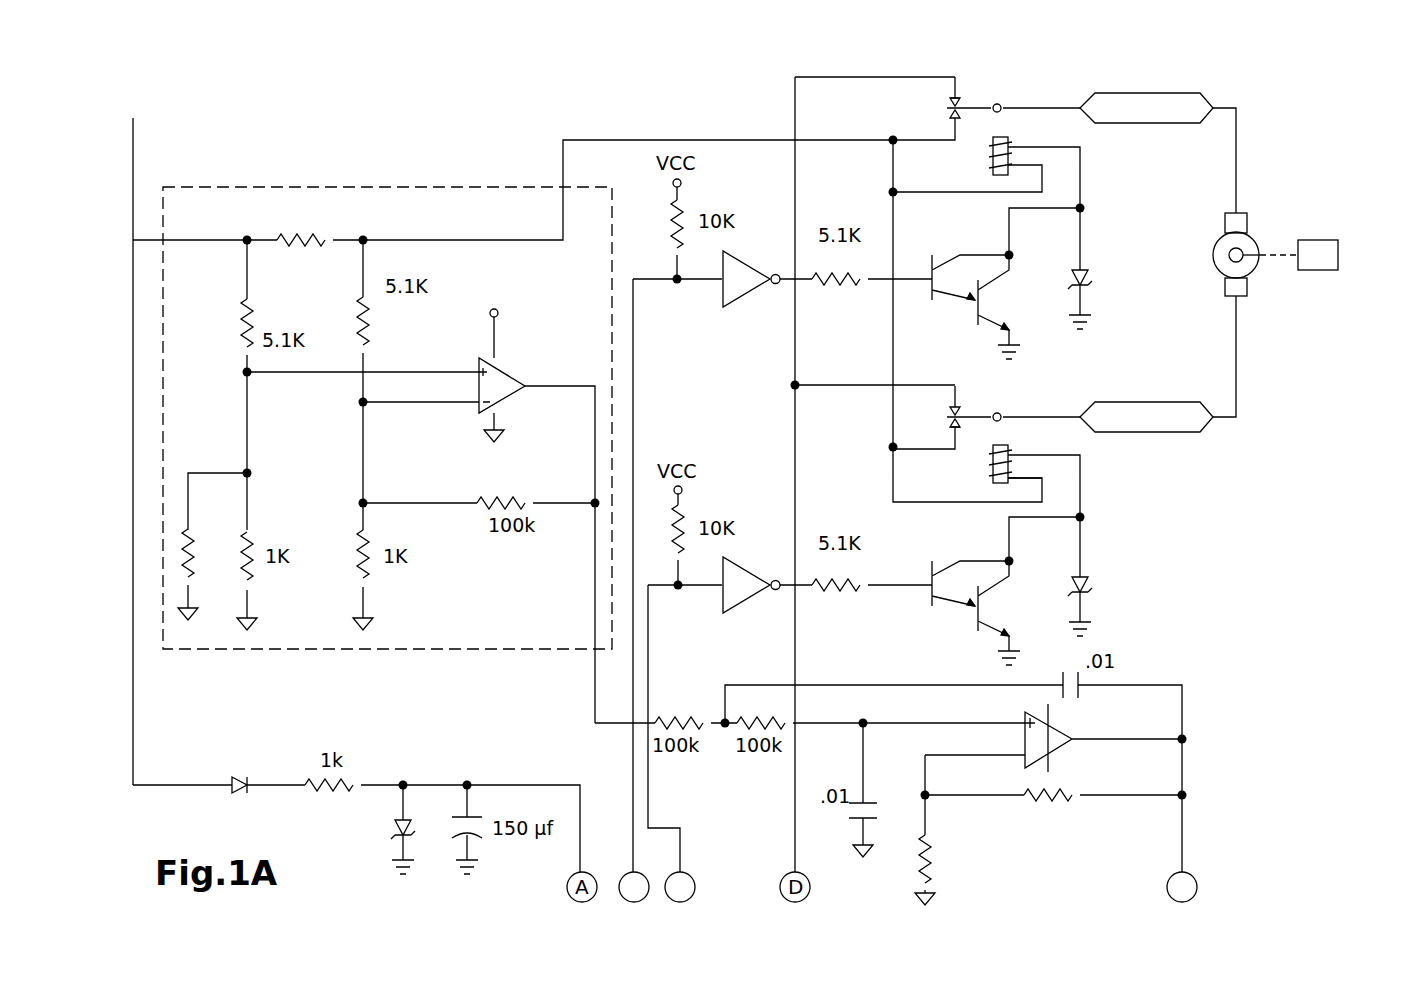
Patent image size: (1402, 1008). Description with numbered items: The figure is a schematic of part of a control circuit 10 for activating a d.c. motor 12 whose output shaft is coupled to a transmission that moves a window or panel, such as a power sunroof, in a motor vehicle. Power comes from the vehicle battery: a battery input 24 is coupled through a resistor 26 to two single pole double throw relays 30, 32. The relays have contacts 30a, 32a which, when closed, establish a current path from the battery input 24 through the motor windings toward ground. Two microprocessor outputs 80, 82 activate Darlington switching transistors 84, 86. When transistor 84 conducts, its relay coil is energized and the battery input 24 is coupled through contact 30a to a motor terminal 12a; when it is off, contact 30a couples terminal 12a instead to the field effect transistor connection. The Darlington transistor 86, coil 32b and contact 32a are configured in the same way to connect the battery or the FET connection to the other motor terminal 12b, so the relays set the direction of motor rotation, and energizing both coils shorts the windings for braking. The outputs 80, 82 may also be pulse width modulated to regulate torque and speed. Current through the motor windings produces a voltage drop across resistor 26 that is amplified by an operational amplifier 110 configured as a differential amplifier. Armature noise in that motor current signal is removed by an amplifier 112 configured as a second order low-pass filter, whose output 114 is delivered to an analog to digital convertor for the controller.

The control circuit 10 is at (634, 121).
The d.c. motor 12 is at (1250, 262).
The motor terminal 12a is at (1236, 157).
The motor terminal 12b is at (1236, 322).
The battery input 24 is at (133, 126).
The resistor 26 is at (310, 233).
The single pole double throw relay 30 is at (968, 95).
The relay contact 30a is at (950, 110).
The single pole double throw relay 32 is at (968, 400).
The relay contact 32a is at (950, 428).
The relay coil 32b is at (1040, 497).
The microprocessor output 80 is at (628, 878).
The microprocessor output 82 is at (698, 882).
The Darlington switching transistor 84 is at (926, 290).
The Darlington switching transistor 86 is at (934, 601).
The operational amplifier 110 is at (505, 381).
The filter amplifier 112 is at (1050, 730).
The output 114 is at (1182, 848).